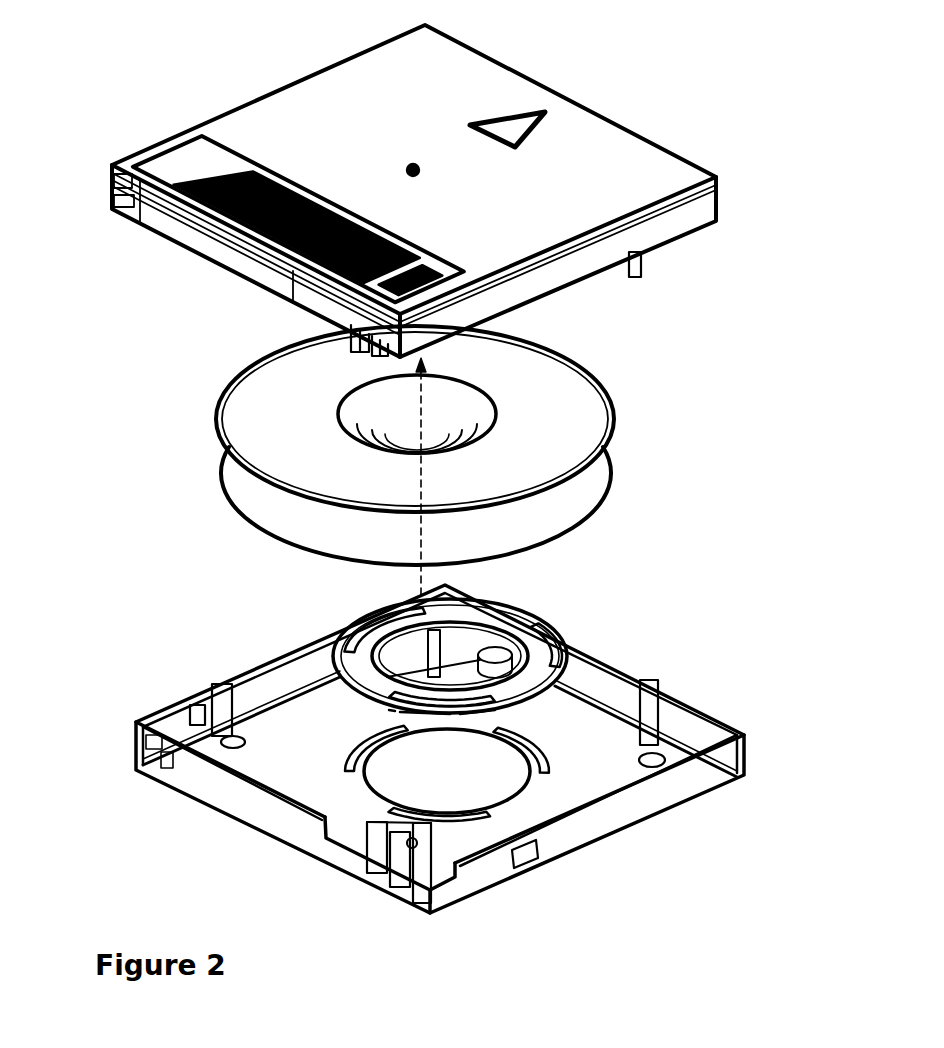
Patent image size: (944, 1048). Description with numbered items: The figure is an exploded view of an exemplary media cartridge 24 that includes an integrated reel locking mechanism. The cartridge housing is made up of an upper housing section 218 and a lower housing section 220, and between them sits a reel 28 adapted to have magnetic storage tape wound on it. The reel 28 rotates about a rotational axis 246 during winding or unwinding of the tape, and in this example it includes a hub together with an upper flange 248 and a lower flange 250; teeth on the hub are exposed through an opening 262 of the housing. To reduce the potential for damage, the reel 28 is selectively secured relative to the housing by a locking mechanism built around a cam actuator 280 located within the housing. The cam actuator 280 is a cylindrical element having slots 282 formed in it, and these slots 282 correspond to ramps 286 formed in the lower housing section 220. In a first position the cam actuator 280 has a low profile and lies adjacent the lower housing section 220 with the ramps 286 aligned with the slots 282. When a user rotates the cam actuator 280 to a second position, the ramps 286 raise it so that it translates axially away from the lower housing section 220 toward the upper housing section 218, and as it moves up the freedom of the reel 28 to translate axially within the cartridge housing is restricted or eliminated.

The cartridge 24 is at (120, 147).
The upper housing section 218 is at (705, 207).
The reel 28 is at (465, 462).
The rotational axis 246 is at (418, 400).
The upper flange 248 is at (583, 410).
The lower flange 250 is at (590, 493).
The cam actuator 280 is at (510, 632).
The slots 282 is at (558, 633).
The ramps 286 is at (545, 760).
The lower housing section 220 is at (459, 755).
The opening 262 is at (478, 787).